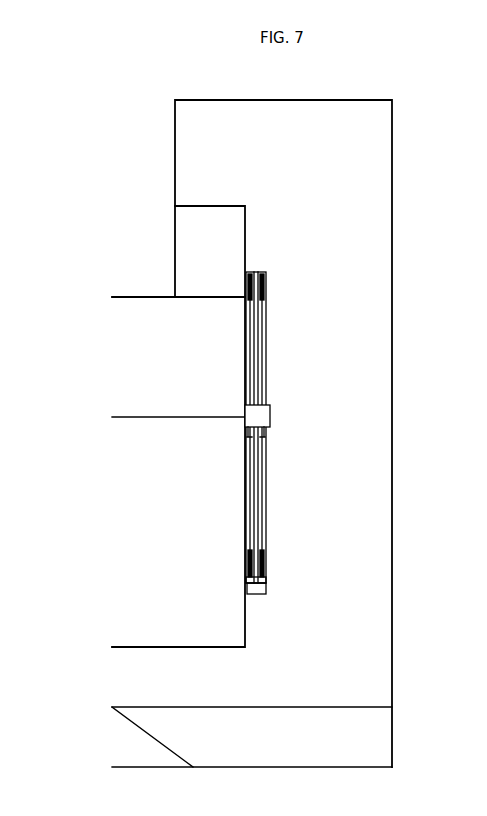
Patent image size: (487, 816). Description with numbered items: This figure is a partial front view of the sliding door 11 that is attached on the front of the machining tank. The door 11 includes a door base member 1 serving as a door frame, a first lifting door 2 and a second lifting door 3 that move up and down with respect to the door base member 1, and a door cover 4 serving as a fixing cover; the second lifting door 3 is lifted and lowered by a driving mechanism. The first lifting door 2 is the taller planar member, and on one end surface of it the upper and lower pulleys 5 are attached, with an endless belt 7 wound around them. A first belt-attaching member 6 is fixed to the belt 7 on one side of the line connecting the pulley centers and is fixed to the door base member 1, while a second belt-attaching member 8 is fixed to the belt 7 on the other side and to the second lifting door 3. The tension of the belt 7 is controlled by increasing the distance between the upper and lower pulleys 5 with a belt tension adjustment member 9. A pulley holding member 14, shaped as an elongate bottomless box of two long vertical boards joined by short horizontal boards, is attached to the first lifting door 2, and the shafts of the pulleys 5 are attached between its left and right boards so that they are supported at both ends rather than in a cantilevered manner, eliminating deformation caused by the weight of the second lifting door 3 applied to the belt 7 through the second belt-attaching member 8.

The door base member 1 is at (394, 233).
The first lifting door 2 is at (212, 204).
The second lifting door 3 is at (212, 292).
The door cover 4 is at (160, 742).
The pulley 5 is at (264, 272).
The first belt-attaching member 6 is at (271, 436).
The endless belt 7 is at (265, 488).
The second belt-attaching member 8 is at (272, 412).
The belt tension adjustment member 9 is at (270, 598).
The door 11 is at (108, 731).
The pulley holding member 14 is at (270, 510).